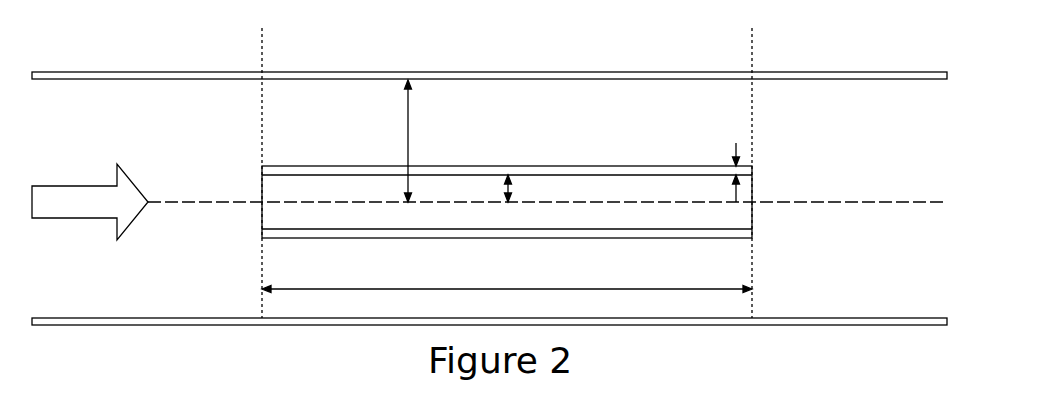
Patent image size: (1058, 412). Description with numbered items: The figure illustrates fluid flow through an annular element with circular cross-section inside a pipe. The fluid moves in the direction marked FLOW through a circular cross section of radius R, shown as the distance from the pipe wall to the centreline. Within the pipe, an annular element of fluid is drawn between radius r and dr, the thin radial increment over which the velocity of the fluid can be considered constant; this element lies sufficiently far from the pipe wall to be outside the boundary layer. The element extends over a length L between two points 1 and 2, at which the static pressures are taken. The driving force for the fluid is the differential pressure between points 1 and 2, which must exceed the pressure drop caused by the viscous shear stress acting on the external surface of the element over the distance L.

The point 1 is at (262, 159).
The point 2 is at (752, 159).
The pipe radius R is at (419, 141).
The fluid element radius r is at (518, 187).
The annular element thickness dr is at (723, 169).
The fluid element length L is at (507, 275).
The flow direction FLOW is at (90, 202).